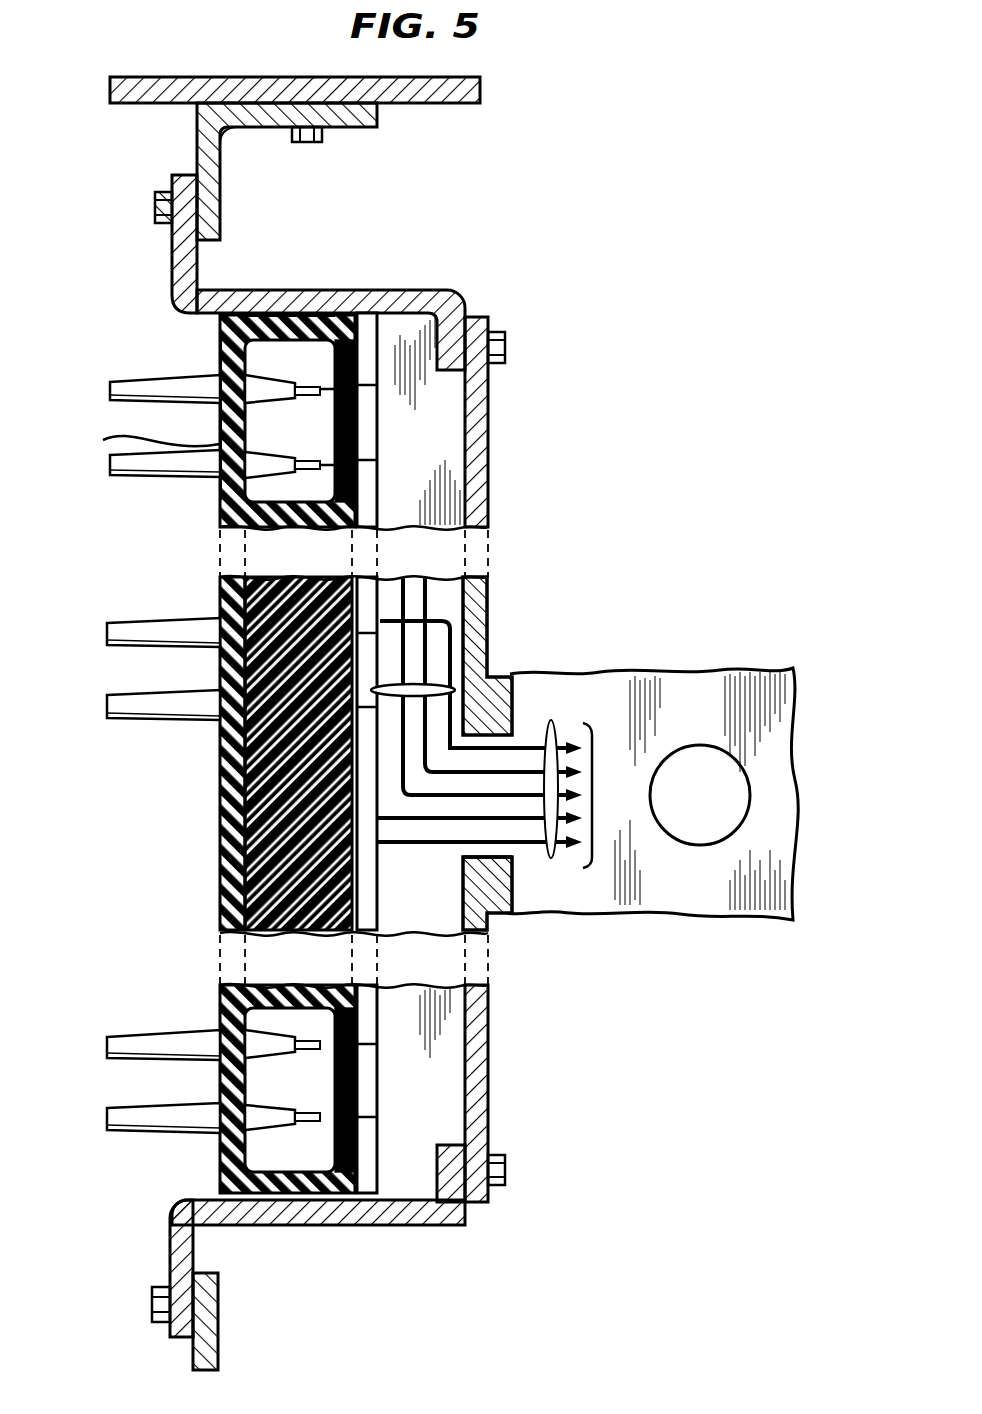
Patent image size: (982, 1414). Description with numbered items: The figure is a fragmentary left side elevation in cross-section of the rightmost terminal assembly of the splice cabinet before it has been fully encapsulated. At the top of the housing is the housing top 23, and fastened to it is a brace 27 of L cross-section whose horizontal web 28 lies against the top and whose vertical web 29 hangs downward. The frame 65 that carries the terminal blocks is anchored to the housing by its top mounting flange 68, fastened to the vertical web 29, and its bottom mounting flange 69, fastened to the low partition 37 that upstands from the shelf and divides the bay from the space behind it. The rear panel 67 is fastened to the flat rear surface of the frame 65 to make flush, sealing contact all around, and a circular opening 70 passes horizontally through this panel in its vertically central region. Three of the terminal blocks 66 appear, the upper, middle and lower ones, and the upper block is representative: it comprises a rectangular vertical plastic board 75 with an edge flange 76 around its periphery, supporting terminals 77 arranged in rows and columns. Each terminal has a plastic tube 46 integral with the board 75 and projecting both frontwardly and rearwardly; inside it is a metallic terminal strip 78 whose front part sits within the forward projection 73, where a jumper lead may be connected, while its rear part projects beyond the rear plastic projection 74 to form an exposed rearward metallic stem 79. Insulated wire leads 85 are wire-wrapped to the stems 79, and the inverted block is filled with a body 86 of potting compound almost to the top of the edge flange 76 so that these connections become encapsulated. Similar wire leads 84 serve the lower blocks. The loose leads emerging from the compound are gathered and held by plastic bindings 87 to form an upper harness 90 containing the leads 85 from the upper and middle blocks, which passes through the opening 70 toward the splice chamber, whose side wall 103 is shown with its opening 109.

The housing top 23 is at (482, 92).
The brace 27 is at (197, 112).
The horizontal web 28 is at (335, 130).
The vertical web 29 is at (222, 147).
The top mounting flange 68 is at (172, 275).
The edge flange 76 is at (262, 315).
The insulated wire leads 85 is at (310, 320).
The frame 65 is at (372, 290).
The forward projection 73 is at (142, 378).
The rear plastic projection 74 is at (220, 368).
The metallic terminal strip 78 is at (300, 385).
The plastic tube 46 is at (107, 406).
The terminals 77 is at (212, 408).
The terminal blocks 66 is at (146, 440).
The rearward metallic stem 79 is at (295, 455).
The plastic board 75 is at (217, 512).
The rear panel 67 is at (490, 470).
The body of potting compound 86 is at (261, 583).
The plastic bindings 87 is at (455, 682).
The side wall 103 is at (701, 668).
The upper harness 90 is at (607, 795).
The opening 109 is at (795, 797).
The circular opening 70 is at (472, 855).
The wire leads 84 is at (353, 1117).
The bottom mounting flange 69 is at (171, 1249).
The partition 37 is at (218, 1345).